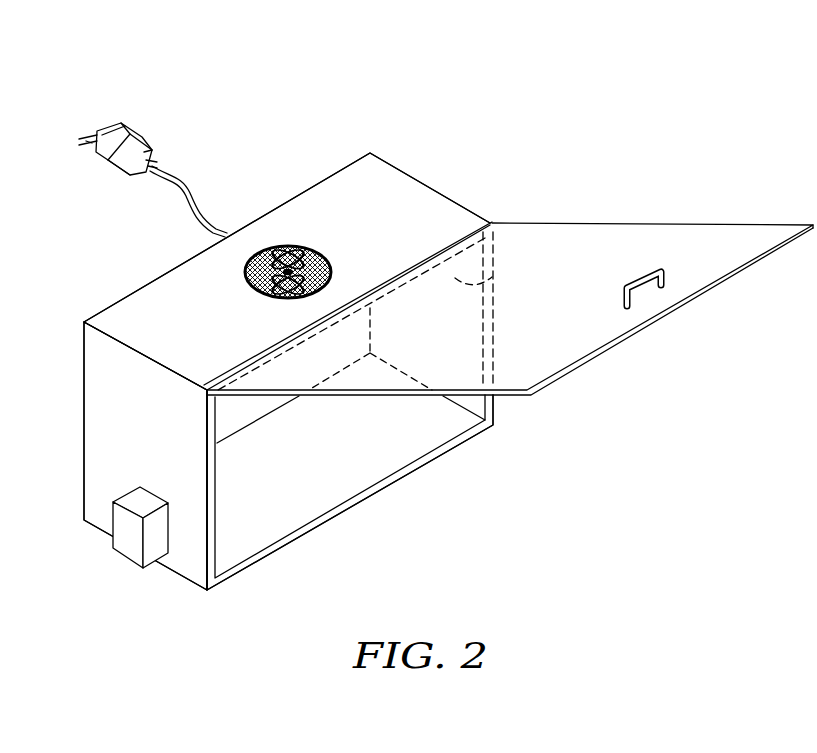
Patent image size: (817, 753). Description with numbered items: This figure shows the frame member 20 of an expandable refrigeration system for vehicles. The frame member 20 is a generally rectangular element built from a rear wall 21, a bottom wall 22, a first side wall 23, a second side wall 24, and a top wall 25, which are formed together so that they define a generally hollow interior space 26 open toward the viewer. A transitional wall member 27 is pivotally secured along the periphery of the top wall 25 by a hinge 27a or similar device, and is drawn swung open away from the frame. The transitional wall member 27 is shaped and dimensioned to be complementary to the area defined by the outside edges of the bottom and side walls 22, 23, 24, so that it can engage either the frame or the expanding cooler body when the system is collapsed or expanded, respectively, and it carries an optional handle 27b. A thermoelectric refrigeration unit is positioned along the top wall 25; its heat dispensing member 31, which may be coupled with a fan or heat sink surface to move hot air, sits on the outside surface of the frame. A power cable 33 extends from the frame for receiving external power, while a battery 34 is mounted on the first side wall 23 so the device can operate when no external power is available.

The frame member 20 is at (524, 122).
The rear wall 21 is at (230, 417).
The bottom wall 22 is at (283, 506).
The first side wall 23 is at (164, 454).
The second side wall 24 is at (497, 270).
The top wall 25 is at (379, 242).
The hollow interior space 26 is at (352, 453).
The transitional wall member 27 is at (723, 243).
The hinge 27a is at (453, 245).
The handle 27b is at (643, 268).
The heat dispensing member 31 is at (245, 265).
The power cord with plug 33 is at (170, 180).
The batteries 34 is at (130, 545).